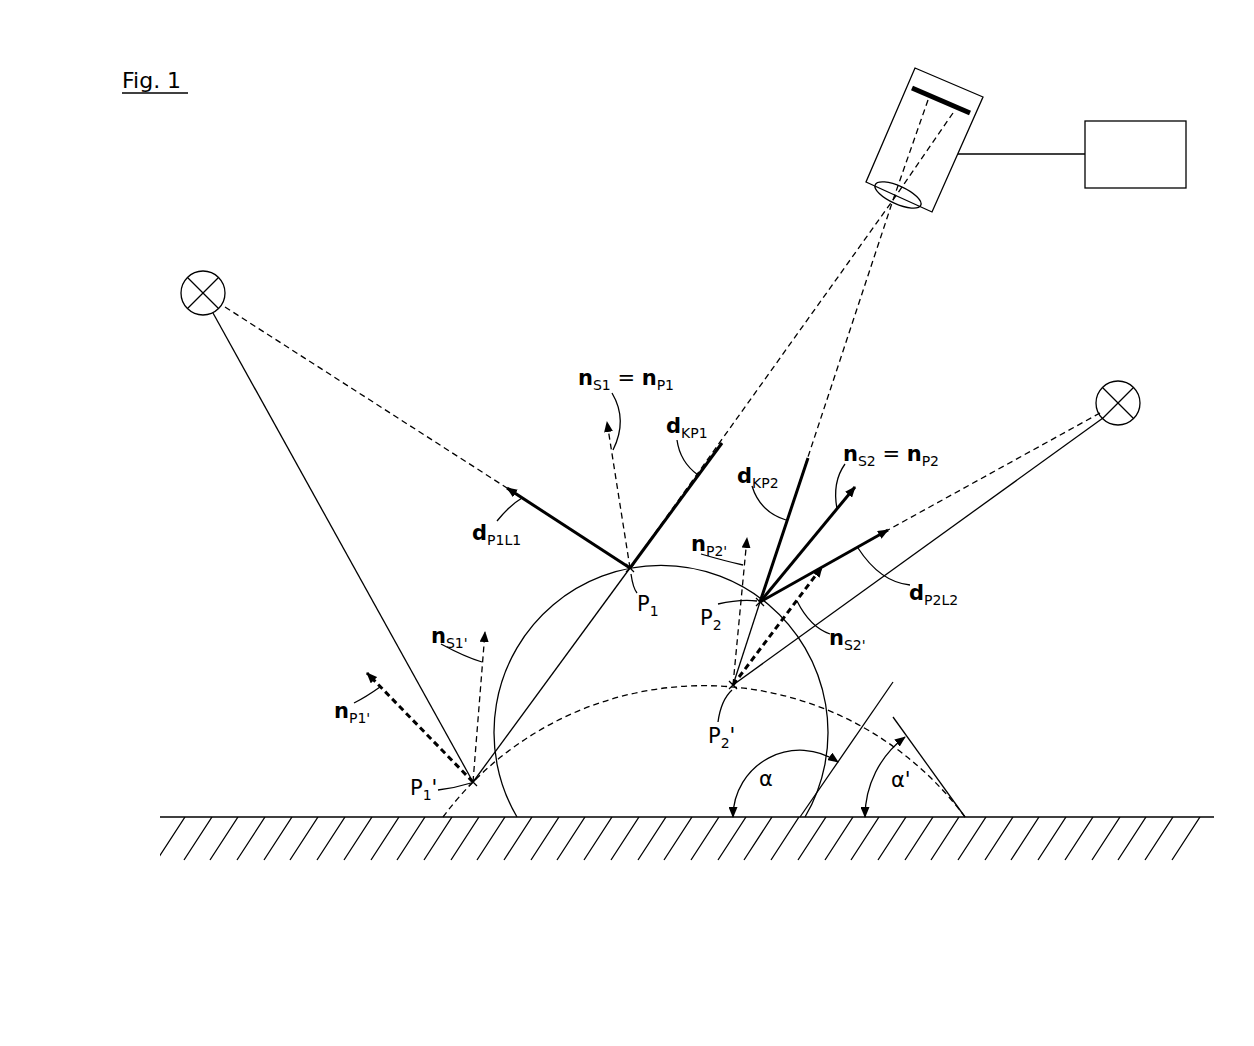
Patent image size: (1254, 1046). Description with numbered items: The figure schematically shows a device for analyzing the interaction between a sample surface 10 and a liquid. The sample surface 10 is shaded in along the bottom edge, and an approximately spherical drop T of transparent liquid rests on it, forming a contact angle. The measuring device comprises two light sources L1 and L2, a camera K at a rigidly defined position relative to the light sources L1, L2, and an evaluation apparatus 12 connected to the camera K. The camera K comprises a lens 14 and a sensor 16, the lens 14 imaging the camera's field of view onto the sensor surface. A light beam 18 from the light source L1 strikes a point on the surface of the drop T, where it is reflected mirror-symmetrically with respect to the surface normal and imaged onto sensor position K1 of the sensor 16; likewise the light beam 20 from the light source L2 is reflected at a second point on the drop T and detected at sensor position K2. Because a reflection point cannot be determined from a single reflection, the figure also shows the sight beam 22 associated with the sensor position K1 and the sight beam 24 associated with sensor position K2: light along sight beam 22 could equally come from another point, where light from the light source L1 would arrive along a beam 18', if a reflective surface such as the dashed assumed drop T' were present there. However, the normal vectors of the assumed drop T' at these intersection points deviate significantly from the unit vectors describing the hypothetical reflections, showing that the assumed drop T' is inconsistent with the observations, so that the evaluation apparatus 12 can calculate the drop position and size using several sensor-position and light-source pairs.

The sample surface 10 is at (1160, 817).
The evaluation apparatus 12 is at (1072, 154).
The lens 14 is at (903, 212).
The sensor 16 is at (940, 98).
The light beam from L1 18 is at (366, 397).
The beam to P1' 18' is at (343, 547).
The light beam from L2 20 is at (1027, 452).
The sight beam K1 22 is at (803, 328).
The sight beam K2 24 is at (842, 363).
The camera K is at (945, 182).
The sensor position of the light reflection from L1 K1 is at (958, 115).
The sensor position of the light reflection from L2 K2 is at (928, 98).
The light source L1 is at (207, 280).
The light source L2 is at (1119, 389).
The drop T is at (661, 691).
The assumed drop T' is at (704, 731).